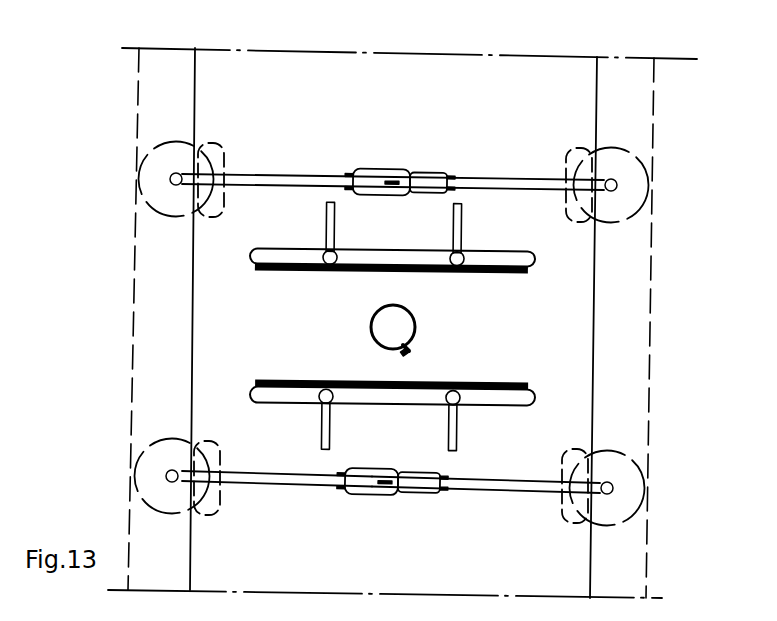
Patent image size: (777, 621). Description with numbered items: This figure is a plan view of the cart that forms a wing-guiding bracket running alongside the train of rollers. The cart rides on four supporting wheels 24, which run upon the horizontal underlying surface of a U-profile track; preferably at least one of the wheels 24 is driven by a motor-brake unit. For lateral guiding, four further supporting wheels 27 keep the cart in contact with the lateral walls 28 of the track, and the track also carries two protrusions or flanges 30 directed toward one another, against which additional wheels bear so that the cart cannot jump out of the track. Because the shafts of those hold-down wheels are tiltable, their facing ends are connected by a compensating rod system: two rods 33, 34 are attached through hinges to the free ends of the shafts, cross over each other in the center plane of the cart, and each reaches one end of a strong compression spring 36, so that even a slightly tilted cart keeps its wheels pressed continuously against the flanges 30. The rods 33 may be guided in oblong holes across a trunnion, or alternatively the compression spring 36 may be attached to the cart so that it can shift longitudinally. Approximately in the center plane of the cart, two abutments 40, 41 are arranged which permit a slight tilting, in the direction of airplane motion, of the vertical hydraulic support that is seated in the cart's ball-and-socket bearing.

The supporting wheels 24 is at (226, 162).
The supporting wheels 27 is at (652, 190).
The lateral walls 28 is at (654, 307).
The protrusions or flanges 30 is at (165, 47).
The rod 33 is at (292, 170).
The rod 34 is at (514, 178).
The compression spring 36 is at (412, 165).
The abutment 40 is at (530, 383).
The abutment 41 is at (525, 277).